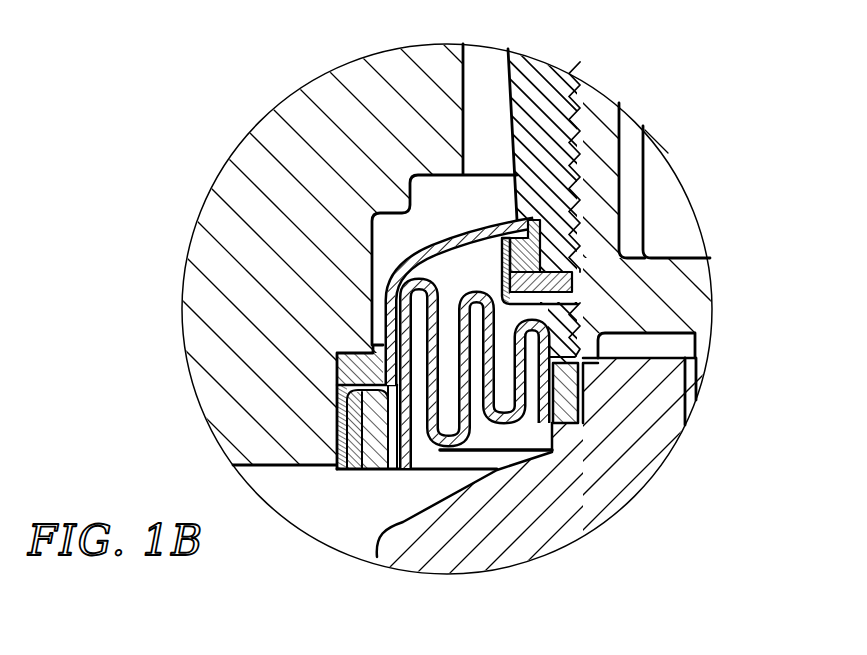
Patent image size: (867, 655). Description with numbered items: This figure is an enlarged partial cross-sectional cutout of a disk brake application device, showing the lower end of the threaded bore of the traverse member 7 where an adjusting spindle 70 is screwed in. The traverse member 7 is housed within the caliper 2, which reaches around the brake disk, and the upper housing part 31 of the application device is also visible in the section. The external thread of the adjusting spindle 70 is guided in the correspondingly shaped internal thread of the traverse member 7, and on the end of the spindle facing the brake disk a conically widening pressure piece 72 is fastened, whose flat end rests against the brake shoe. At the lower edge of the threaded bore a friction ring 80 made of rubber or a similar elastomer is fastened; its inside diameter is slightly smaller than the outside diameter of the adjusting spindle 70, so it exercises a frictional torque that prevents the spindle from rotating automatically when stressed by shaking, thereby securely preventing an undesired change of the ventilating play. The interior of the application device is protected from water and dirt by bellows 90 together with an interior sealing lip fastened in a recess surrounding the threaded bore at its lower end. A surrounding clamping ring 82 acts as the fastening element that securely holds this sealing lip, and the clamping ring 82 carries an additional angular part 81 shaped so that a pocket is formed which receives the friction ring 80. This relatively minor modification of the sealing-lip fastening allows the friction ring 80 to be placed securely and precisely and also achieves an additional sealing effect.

The caliper 2 is at (205, 247).
The traverse member 7 is at (543, 82).
The upper housing part 31 is at (337, 366).
The adjusting spindle 70 is at (603, 113).
The pressure piece 72 is at (585, 534).
The friction ring 80 is at (622, 246).
The angular part 81 is at (597, 288).
The clamping ring 82 is at (535, 236).
The bellows 90 is at (382, 467).